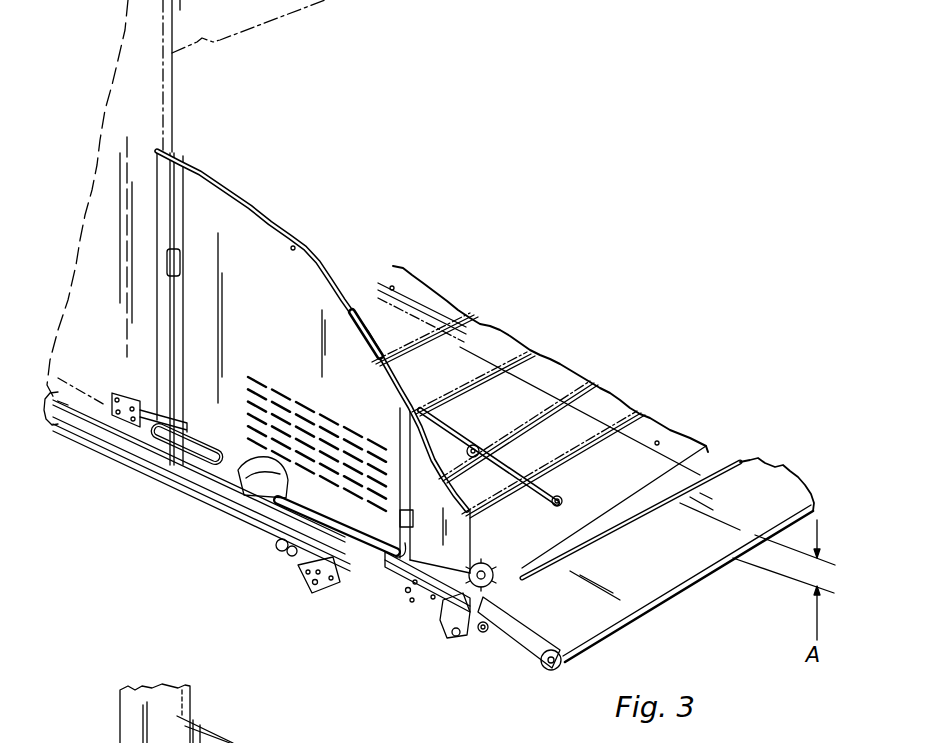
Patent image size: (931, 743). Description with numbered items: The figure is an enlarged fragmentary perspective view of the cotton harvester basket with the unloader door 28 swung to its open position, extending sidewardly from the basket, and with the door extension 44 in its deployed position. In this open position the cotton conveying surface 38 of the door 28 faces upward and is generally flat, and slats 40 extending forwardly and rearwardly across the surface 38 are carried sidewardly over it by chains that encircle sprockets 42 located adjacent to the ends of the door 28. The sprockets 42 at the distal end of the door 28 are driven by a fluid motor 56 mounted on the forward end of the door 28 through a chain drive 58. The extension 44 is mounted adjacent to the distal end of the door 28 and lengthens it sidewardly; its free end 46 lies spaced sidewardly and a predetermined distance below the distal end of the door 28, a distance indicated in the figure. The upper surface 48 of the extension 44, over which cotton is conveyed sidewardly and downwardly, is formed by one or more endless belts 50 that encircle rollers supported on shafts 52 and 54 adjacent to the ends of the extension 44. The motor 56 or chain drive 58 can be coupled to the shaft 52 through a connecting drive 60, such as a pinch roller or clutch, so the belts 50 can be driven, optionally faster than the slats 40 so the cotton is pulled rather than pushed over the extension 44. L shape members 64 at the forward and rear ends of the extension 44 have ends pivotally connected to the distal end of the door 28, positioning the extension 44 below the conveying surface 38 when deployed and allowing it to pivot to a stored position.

The unloader door 28 is at (551, 356).
The cotton conveying surface 38 is at (497, 342).
The slats 40 is at (377, 303).
The sprockets 42 is at (500, 583).
The door extension 44 is at (742, 565).
The free end 46 is at (617, 627).
The upper surface 48 is at (762, 486).
The endless belts 50 is at (743, 473).
The shaft 52 is at (485, 632).
The shaft 54 is at (553, 670).
The fluid motor 56 is at (325, 594).
The chain drive 58 is at (403, 607).
The connecting drive 60 is at (457, 640).
The L shape members 64 is at (530, 658).